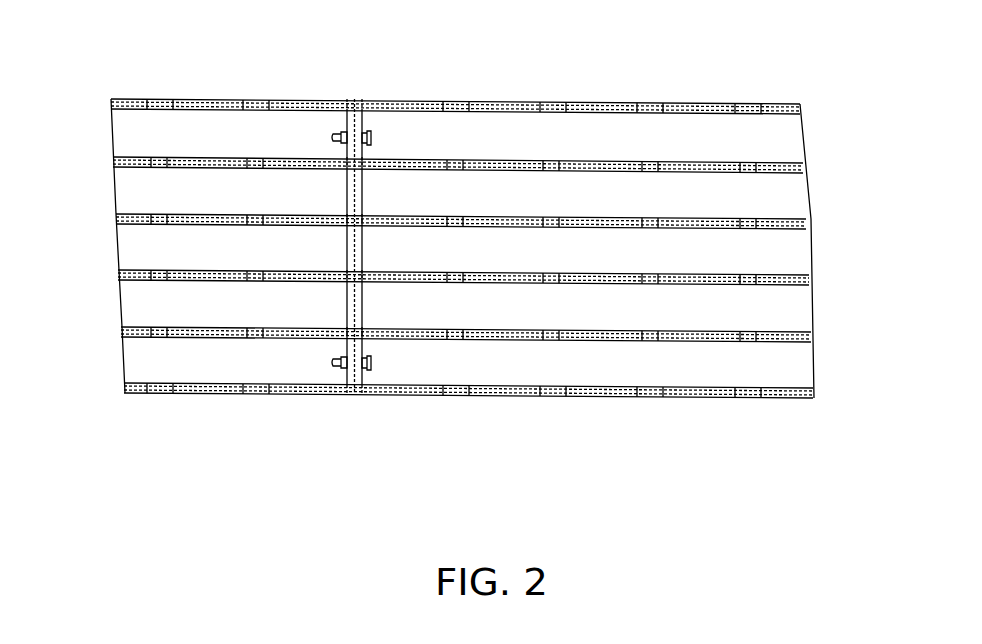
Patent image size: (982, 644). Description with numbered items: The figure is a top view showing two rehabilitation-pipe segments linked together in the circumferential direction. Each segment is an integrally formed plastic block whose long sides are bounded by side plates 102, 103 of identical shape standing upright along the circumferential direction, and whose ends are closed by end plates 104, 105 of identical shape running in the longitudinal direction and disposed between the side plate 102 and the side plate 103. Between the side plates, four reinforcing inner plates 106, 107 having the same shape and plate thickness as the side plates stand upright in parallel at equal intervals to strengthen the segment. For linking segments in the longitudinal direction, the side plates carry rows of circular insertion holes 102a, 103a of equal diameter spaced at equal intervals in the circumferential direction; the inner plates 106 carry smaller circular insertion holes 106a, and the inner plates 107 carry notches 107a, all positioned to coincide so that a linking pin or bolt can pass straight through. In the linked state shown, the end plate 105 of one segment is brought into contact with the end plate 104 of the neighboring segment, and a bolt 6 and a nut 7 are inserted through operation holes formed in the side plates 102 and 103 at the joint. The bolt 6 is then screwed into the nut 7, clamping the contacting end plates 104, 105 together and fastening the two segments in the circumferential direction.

The side plate 102 is at (124, 391).
The insertion hole 102a is at (246, 395).
The side plate 103 is at (111, 101).
The insertion hole 103a is at (165, 100).
The end plate 104 is at (364, 248).
The end plate 105 is at (346, 248).
The inner plate 106 is at (113, 164).
The insertion hole 106a is at (259, 158).
The inner plate 107 is at (116, 221).
The notch 107a is at (163, 215).
The bolt 6 is at (372, 138).
The nut 7 is at (332, 138).